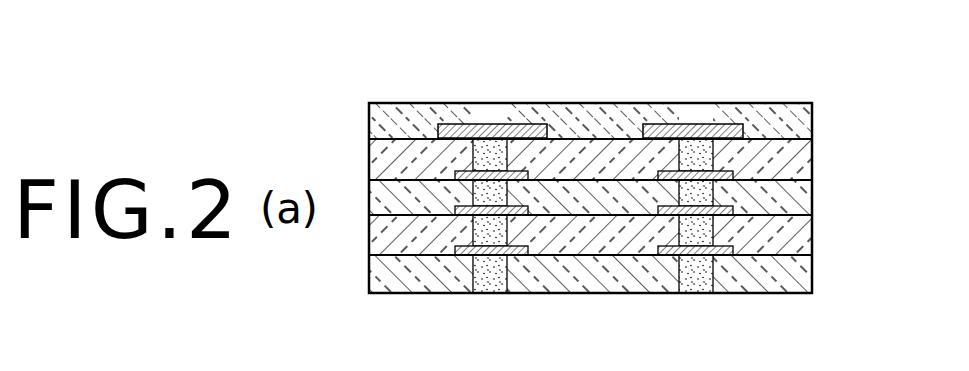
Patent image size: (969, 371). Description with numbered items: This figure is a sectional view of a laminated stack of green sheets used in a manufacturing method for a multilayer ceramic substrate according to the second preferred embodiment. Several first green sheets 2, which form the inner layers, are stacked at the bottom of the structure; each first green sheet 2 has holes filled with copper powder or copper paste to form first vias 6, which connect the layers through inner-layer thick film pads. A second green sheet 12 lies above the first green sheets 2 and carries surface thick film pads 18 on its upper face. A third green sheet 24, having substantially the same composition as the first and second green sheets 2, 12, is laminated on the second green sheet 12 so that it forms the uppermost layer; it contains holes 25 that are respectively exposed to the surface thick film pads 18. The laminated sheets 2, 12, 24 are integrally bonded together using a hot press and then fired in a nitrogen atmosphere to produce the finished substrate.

The first green sheet 2 is at (802, 262).
The first via 6 is at (485, 295).
The second green sheet 12 is at (797, 160).
The surface thick film pad 18 is at (492, 103).
The third green sheet 24 is at (813, 113).
The hole 25 is at (478, 103).